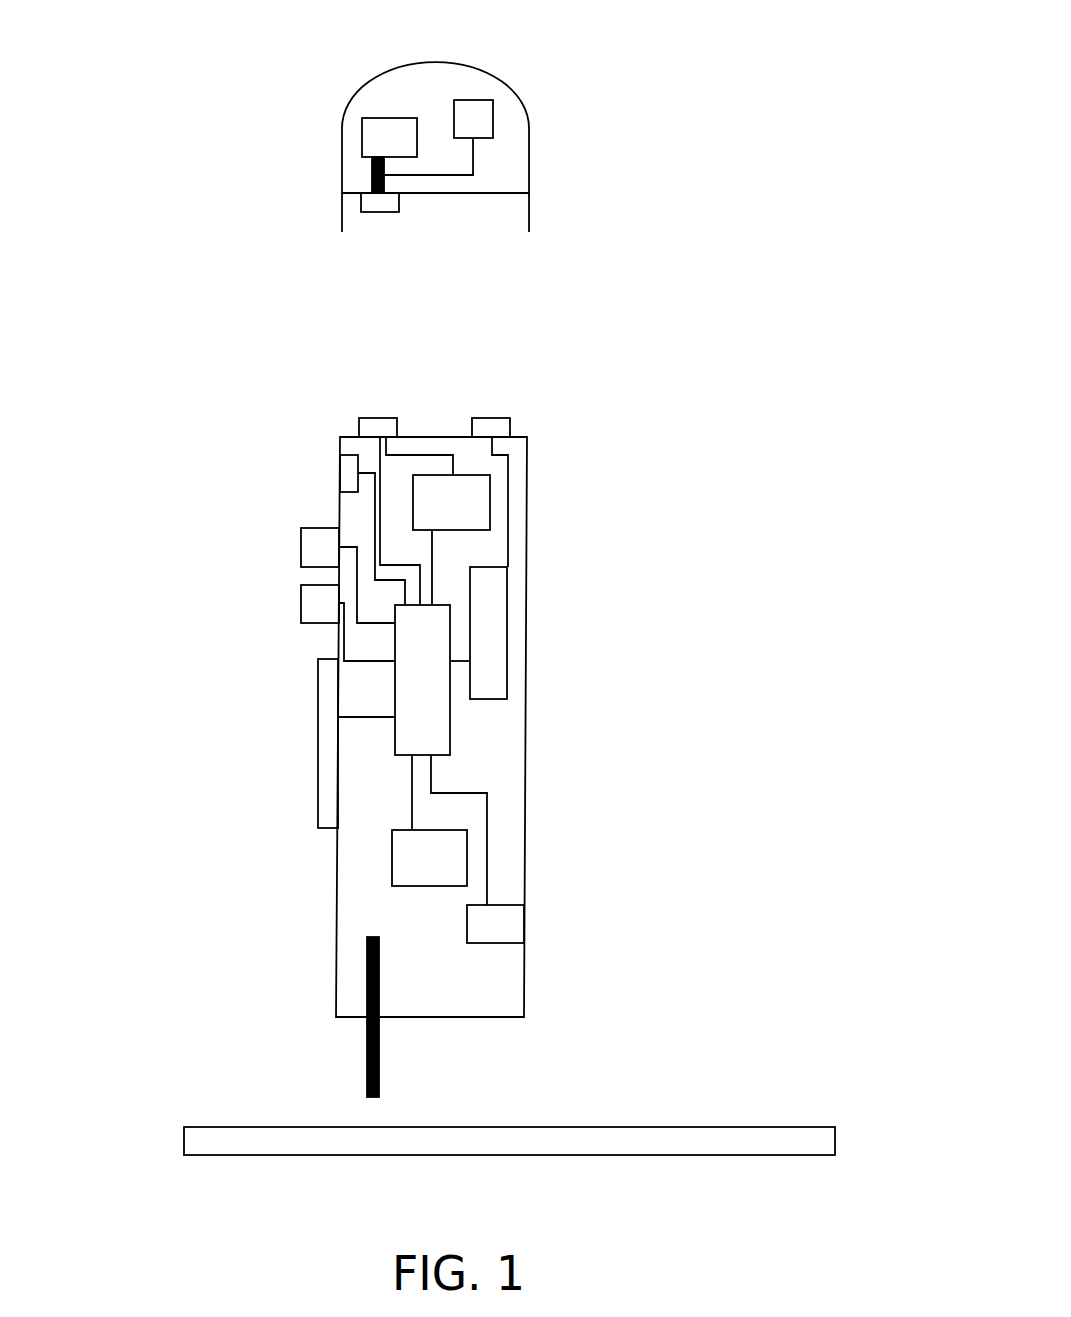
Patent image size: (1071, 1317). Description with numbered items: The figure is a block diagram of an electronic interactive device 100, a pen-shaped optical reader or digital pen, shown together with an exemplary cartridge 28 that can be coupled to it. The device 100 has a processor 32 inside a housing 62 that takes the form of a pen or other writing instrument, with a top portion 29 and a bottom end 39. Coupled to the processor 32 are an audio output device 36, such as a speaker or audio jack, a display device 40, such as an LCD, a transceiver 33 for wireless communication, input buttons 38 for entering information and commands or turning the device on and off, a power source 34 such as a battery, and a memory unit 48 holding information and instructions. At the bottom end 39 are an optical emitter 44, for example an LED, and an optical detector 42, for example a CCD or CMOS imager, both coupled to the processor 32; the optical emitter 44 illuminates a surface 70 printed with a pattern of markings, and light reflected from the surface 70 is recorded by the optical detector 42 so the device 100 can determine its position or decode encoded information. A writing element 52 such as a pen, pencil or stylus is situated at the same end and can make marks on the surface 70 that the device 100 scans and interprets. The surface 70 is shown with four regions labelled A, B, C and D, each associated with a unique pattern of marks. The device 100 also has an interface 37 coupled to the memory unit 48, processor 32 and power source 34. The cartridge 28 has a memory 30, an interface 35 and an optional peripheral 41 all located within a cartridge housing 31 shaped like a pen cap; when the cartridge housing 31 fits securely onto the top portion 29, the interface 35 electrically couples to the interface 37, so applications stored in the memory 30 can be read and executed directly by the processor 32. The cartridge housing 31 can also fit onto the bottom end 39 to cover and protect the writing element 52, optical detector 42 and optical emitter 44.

The cartridge 28 is at (330, 56).
The memory 30 is at (362, 132).
The peripheral 41 is at (473, 100).
The cartridge housing 31 is at (529, 172).
The interface 35 is at (380, 213).
The interface 37 is at (417, 400).
The audio output device 36 is at (491, 418).
The memory unit 48 is at (340, 473).
The top portion 29 is at (527, 438).
The power source 34 is at (490, 508).
The input buttons 38 is at (301, 605).
The electronic interactive device 100 is at (468, 723).
The transceiver 33 is at (508, 660).
The display device 40 is at (318, 755).
The processor 32 is at (450, 733).
The housing 62 is at (525, 820).
The optical detector 42 is at (467, 865).
The optical emitter 44 is at (518, 920).
The writing element 52 is at (245, 1017).
The surface 70 is at (183, 1127).
The bottom end 39 is at (485, 1018).